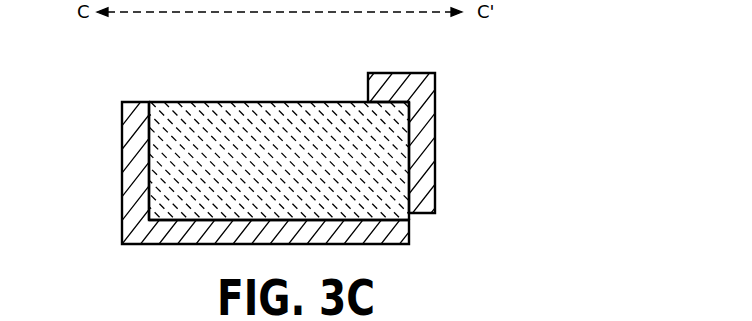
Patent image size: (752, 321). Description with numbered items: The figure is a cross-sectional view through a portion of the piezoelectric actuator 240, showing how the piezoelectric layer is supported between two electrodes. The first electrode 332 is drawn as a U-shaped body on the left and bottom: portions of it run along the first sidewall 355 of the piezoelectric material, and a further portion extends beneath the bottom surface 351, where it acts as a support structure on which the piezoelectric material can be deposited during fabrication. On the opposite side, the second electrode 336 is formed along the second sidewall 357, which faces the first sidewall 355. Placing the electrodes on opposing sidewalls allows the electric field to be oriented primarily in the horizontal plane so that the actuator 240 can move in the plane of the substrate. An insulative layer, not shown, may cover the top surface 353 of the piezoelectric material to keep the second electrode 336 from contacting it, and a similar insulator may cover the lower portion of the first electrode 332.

The piezoelectric actuator 240 is at (513, 52).
The first electrode 332 is at (135, 178).
The second electrode 336 is at (435, 160).
The bottom surface 351 is at (328, 214).
The top surface 353 is at (209, 99).
The first sidewall 355 is at (152, 158).
The second sidewall 357 is at (403, 136).